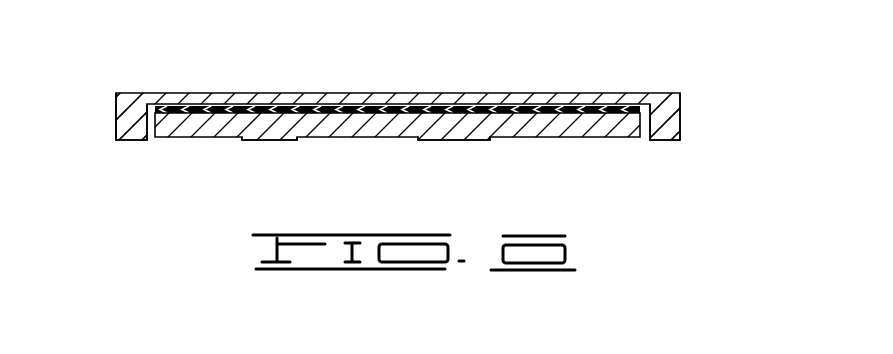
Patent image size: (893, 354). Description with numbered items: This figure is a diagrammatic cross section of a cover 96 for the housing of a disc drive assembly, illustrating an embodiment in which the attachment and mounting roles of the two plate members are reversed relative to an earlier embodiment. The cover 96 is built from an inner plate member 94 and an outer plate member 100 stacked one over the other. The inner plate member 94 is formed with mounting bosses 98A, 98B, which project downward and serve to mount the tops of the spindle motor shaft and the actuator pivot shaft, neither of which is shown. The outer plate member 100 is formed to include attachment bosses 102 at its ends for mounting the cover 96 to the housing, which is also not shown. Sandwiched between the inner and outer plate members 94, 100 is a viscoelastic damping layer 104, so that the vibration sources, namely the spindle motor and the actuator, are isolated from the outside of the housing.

The cover 96 is at (377, 85).
The outer plate member 100 is at (197, 93).
The attachment bosses 102 is at (130, 140).
The viscoelastic damping layer 104 is at (485, 112).
The inner plate member 94 is at (550, 137).
The mounting boss 98A is at (443, 140).
The mounting boss 98B is at (257, 140).